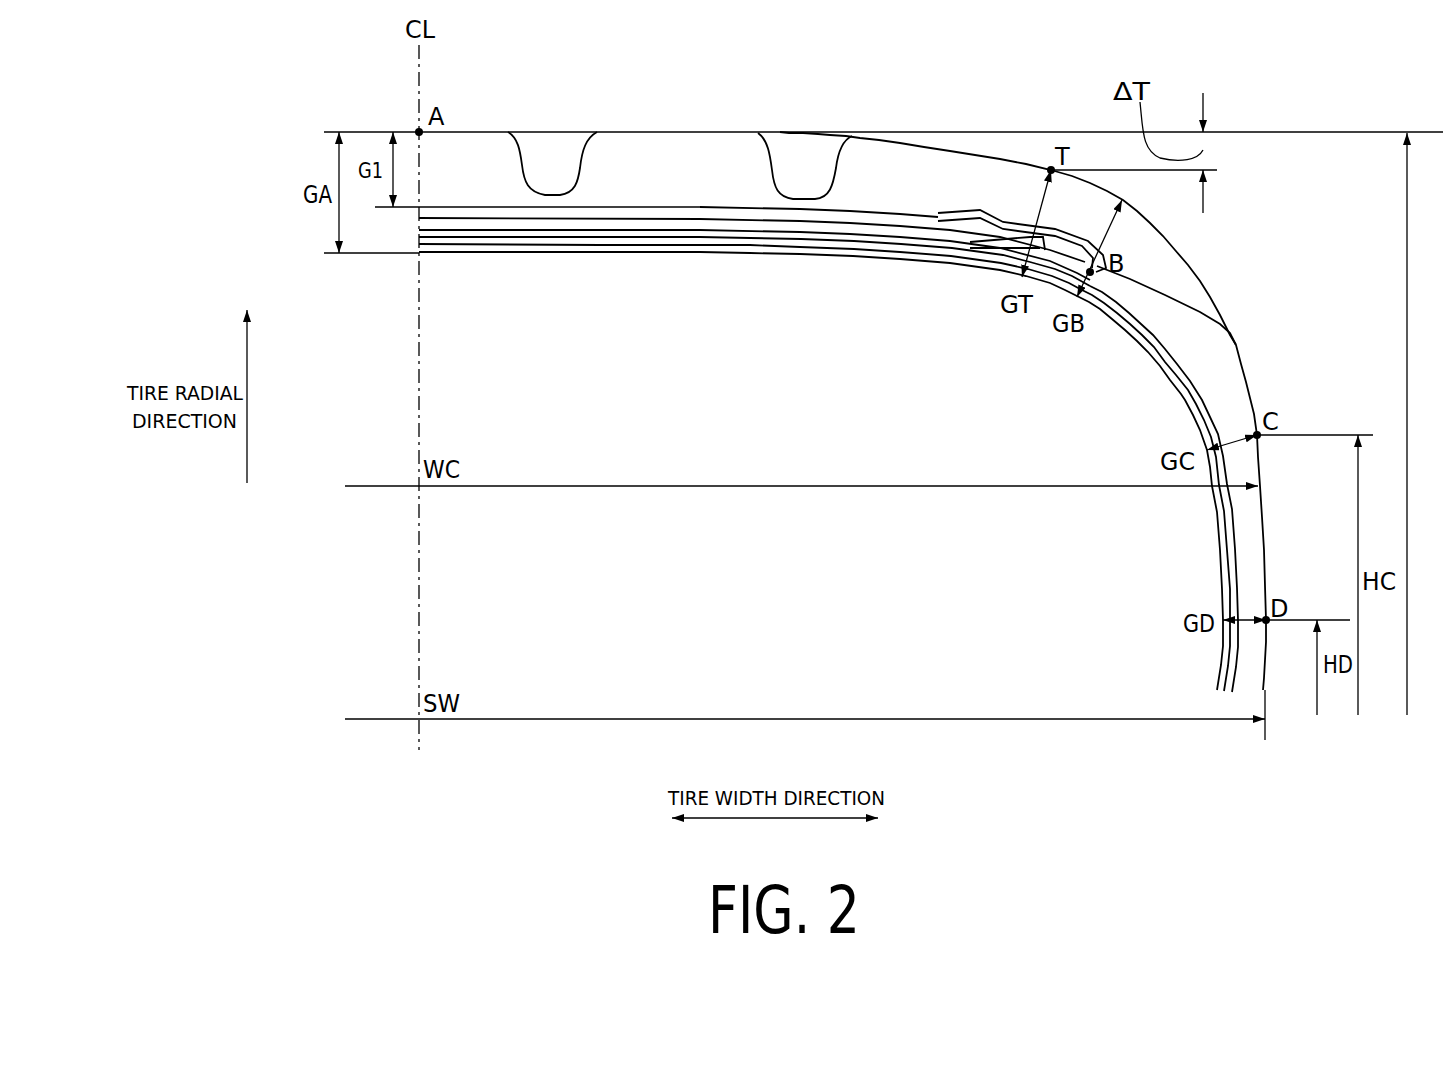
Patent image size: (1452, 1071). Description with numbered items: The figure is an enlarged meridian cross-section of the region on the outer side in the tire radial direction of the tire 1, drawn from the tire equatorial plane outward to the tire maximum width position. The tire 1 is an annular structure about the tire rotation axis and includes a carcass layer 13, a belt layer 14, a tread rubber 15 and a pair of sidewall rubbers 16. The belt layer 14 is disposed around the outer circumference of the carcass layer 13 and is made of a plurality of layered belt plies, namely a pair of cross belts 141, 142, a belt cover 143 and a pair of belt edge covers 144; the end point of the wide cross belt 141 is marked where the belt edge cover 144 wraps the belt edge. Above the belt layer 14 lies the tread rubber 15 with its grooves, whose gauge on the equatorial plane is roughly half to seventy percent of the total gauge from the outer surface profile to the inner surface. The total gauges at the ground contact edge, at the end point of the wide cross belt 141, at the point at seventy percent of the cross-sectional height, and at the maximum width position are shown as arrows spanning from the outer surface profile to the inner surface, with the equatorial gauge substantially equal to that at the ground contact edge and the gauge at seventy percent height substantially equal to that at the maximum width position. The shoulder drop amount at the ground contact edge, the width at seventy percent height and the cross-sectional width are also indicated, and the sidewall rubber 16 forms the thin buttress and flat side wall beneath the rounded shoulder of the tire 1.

The tire 1 is at (886, 117).
The carcass layer 13 is at (936, 258).
The belt layer 14 is at (762, 297).
The wide cross belt 141 is at (823, 244).
The cross belt 142 is at (775, 236).
The belt cover 143 is at (732, 214).
The belt edge cover 144 is at (680, 333).
The tread rubber 15 is at (965, 163).
The sidewall rubber 16 is at (1243, 362).